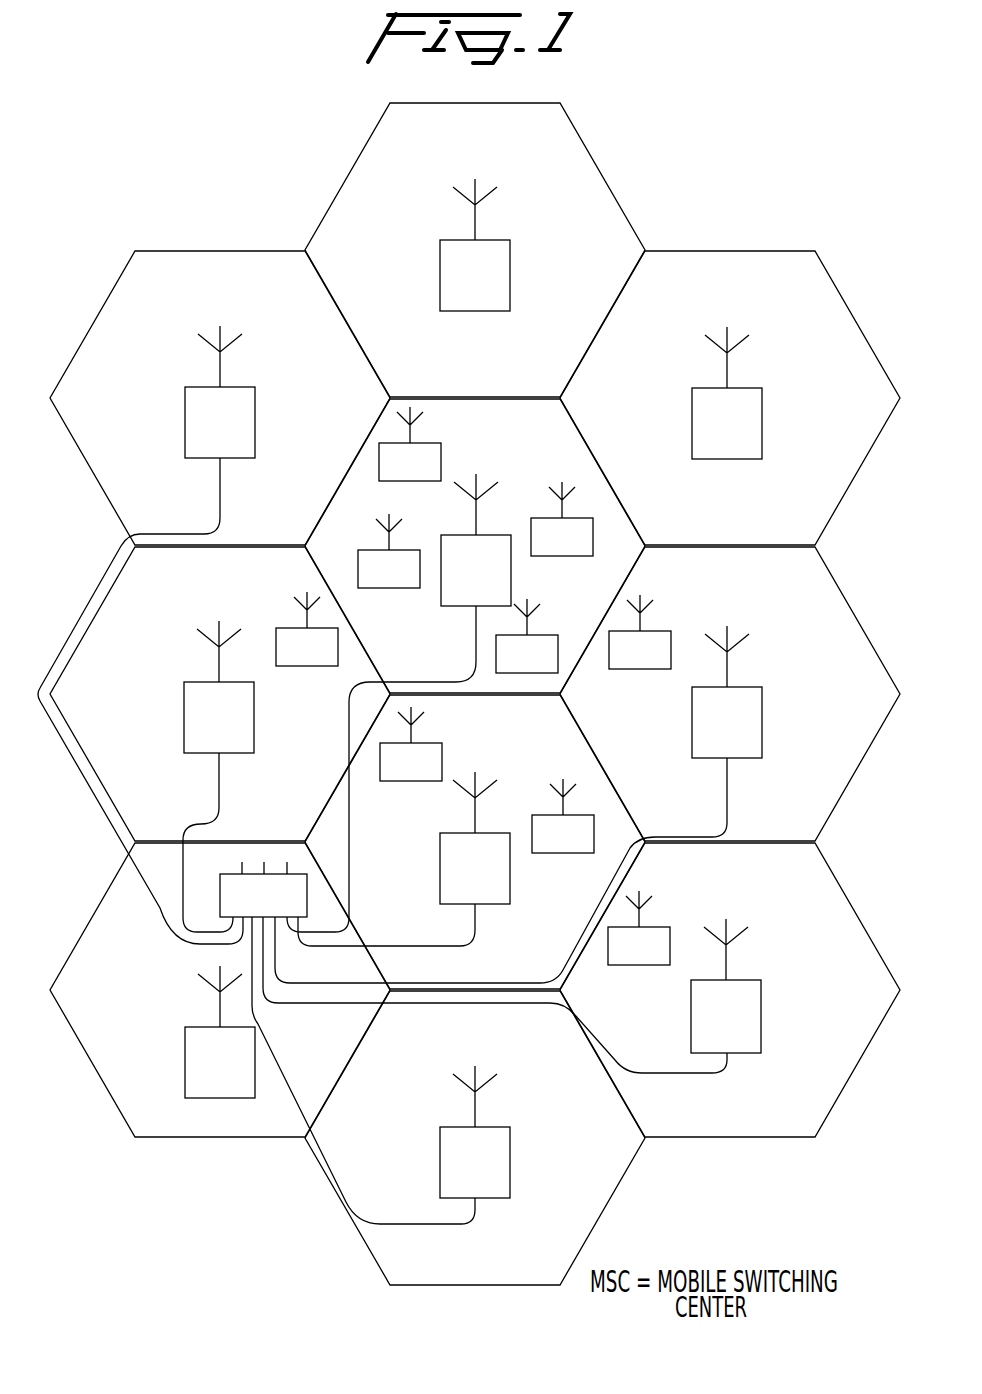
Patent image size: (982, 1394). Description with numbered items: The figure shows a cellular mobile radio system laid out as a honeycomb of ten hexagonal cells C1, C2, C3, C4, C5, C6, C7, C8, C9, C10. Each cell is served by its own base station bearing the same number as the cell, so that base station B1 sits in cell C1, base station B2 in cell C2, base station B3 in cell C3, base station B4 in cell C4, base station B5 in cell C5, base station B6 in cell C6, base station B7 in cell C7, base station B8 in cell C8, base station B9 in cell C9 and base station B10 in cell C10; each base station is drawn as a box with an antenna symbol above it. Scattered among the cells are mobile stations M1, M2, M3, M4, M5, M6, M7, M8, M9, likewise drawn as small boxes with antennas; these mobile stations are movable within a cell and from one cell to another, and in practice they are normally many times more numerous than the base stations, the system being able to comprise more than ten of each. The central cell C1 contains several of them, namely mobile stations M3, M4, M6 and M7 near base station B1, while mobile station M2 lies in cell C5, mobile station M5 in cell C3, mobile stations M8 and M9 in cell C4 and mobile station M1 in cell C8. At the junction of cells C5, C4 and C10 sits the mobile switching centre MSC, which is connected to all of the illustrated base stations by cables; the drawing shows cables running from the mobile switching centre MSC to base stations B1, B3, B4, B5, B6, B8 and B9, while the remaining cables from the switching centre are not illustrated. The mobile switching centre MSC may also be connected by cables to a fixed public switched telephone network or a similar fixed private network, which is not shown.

The cell C1 is at (413, 678).
The cell C2 is at (668, 530).
The cell C3 is at (668, 826).
The cell C4 is at (413, 974).
The cell C5 is at (158, 826).
The cell C6 is at (158, 530).
The cell C7 is at (413, 382).
The cell C8 is at (668, 1122).
The cell C9 is at (413, 1270).
The cell C10 is at (167, 1120).
The base station B1 is at (399, 703).
The base station B2 is at (727, 393).
The base station B3 is at (518, 804).
The base station B4 is at (404, 859).
The base station B5 is at (218, 776).
The base station B6 is at (146, 635).
The base station B7 is at (475, 245).
The base station B8 is at (512, 995).
The base station B9 is at (381, 1070).
The base station B10 is at (220, 1032).
The mobile station M1 is at (639, 928).
The mobile station M2 is at (307, 629).
The mobile station M3 is at (389, 551).
The mobile station M4 is at (562, 519).
The mobile station M5 is at (640, 632).
The mobile station M6 is at (410, 444).
The mobile station M7 is at (527, 636).
The mobile station M8 is at (563, 816).
The mobile station M9 is at (411, 744).
The mobile switching centre MSC is at (263, 889).